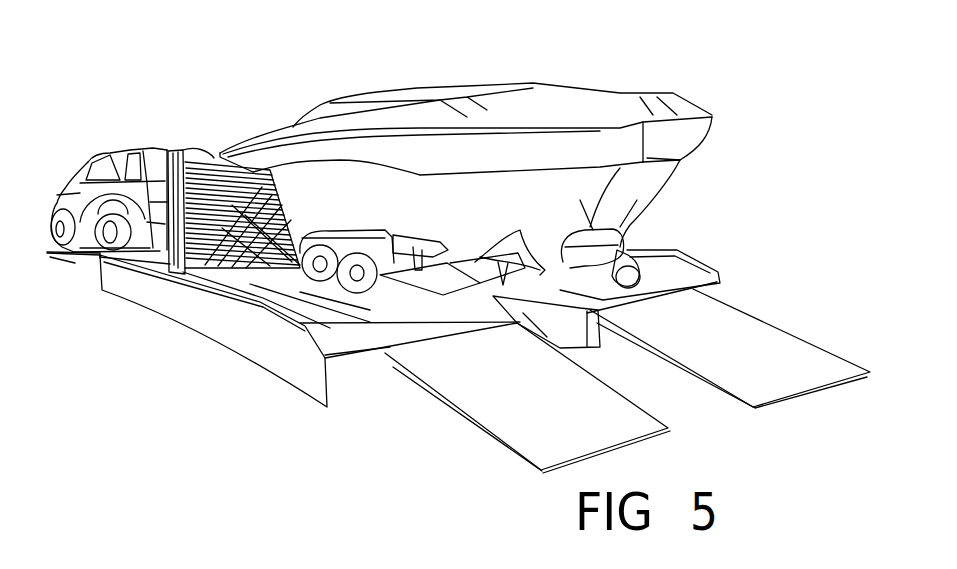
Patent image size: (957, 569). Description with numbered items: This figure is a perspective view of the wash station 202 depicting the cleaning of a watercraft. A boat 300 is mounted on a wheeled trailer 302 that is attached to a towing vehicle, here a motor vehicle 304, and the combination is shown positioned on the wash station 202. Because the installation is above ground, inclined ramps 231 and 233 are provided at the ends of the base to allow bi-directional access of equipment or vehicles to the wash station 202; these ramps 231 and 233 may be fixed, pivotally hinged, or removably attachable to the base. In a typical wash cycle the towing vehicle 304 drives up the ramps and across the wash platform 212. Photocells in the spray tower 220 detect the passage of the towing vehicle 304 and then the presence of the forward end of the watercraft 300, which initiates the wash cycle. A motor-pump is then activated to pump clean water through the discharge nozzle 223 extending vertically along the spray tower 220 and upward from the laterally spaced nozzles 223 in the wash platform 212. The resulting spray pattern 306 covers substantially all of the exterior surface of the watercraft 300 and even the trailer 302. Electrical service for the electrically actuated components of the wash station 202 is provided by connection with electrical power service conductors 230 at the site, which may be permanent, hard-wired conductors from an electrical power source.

The boat 300 is at (403, 193).
The wheeled trailer 302 is at (469, 128).
The motor vehicle 304 is at (133, 147).
The spray pattern 306 is at (237, 188).
The spray tower 220 is at (168, 166).
The discharge nozzle 223 is at (288, 436).
The electrical power service conductors 230 is at (77, 258).
The wash station 202 is at (200, 286).
The wash platform 212 is at (352, 343).
The ramp 231 is at (623, 427).
The ramp 233 is at (770, 322).